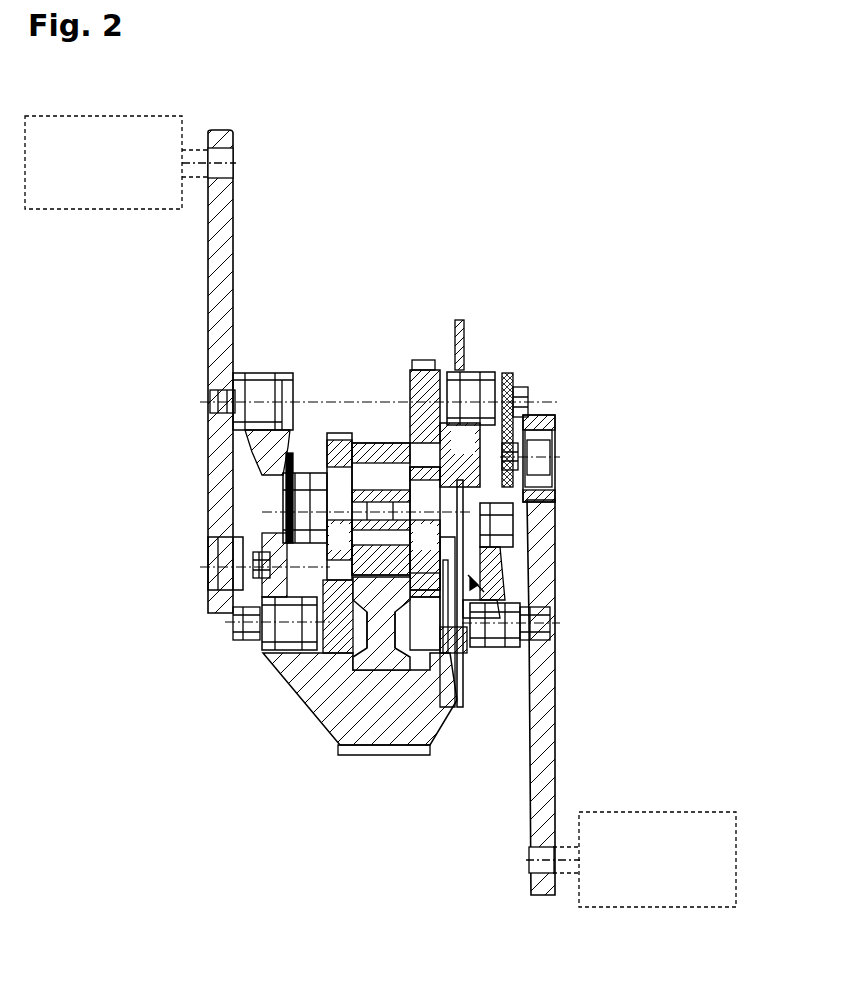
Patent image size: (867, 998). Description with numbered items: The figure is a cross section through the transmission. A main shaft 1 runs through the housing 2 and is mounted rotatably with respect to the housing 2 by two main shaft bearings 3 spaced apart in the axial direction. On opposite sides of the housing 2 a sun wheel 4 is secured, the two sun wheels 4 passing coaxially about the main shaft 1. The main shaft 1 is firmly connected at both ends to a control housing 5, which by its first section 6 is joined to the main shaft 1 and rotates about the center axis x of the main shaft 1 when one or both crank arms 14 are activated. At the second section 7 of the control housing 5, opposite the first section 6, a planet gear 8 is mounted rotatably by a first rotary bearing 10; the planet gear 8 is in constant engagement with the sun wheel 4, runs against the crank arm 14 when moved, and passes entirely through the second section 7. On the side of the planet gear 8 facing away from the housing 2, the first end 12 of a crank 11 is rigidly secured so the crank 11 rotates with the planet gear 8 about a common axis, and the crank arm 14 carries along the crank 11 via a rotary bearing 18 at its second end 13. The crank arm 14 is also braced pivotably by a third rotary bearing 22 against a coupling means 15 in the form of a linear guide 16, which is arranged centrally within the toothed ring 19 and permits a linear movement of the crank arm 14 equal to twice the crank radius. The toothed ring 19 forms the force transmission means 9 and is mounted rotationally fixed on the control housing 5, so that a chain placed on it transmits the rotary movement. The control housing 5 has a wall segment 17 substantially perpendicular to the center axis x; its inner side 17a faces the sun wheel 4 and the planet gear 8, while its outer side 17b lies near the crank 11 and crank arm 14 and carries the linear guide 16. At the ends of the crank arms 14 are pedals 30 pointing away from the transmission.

The main shaft 1 is at (380, 497).
The housing 2 is at (350, 720).
The main shaft bearings 3 is at (346, 548).
The sun wheel 4 is at (399, 368).
The control housing 5 is at (469, 451).
The first section 6 is at (438, 560).
The second section 7 is at (471, 372).
The planet gear 8 is at (423, 363).
The force transmission means 9 is at (495, 285).
The toothed ring 19 is at (463, 326).
The first rotary bearing 10 is at (522, 390).
The crank 11 is at (518, 445).
The first end 12 is at (508, 374).
The second end 13 is at (523, 500).
The crank arm 14 is at (553, 722).
The coupling means 15 is at (552, 551).
The linear guide 16 is at (485, 600).
The wall segment 17 is at (460, 653).
The inner side 17a is at (440, 545).
The outer side 17b is at (497, 588).
The rotary bearing 18 is at (542, 470).
The third rotary bearing 22 is at (497, 643).
The pedals 30 is at (145, 116).
The center axis x is at (348, 490).